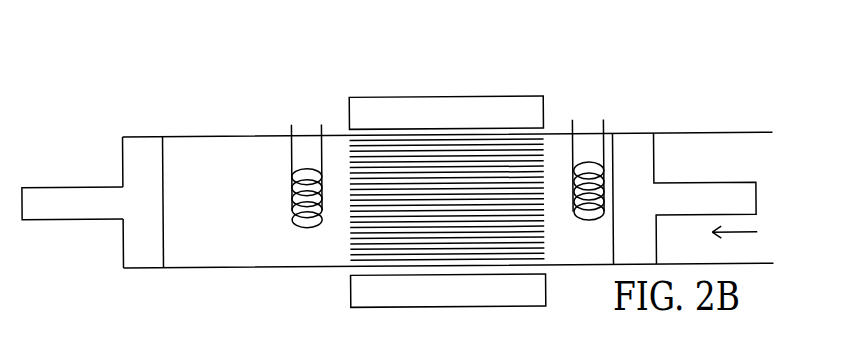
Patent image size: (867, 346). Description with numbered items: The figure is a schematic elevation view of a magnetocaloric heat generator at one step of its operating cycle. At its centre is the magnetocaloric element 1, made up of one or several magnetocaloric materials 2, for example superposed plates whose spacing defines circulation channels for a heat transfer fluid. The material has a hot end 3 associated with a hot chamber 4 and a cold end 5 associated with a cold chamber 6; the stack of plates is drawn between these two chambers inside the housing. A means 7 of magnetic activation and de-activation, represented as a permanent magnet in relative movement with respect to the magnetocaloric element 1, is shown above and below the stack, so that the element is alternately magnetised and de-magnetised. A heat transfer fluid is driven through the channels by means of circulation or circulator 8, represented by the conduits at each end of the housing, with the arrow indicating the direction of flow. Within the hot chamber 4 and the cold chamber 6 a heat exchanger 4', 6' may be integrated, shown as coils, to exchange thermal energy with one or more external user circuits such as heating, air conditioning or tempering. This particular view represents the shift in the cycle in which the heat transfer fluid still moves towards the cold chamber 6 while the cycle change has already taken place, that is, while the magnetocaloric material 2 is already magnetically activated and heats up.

The magnetocaloric element 1 is at (471, 126).
The magnetocaloric material 2 is at (434, 145).
The hot end 3 is at (545, 172).
The hot chamber 4 is at (618, 170).
The heat exchanger 4' is at (589, 142).
The cold end 5 is at (350, 162).
The cold chamber 6 is at (205, 171).
The heat exchanger 6' is at (307, 148).
The means of magnetic activation and de-activation 7 is at (375, 112).
The circulator 8 is at (104, 209).